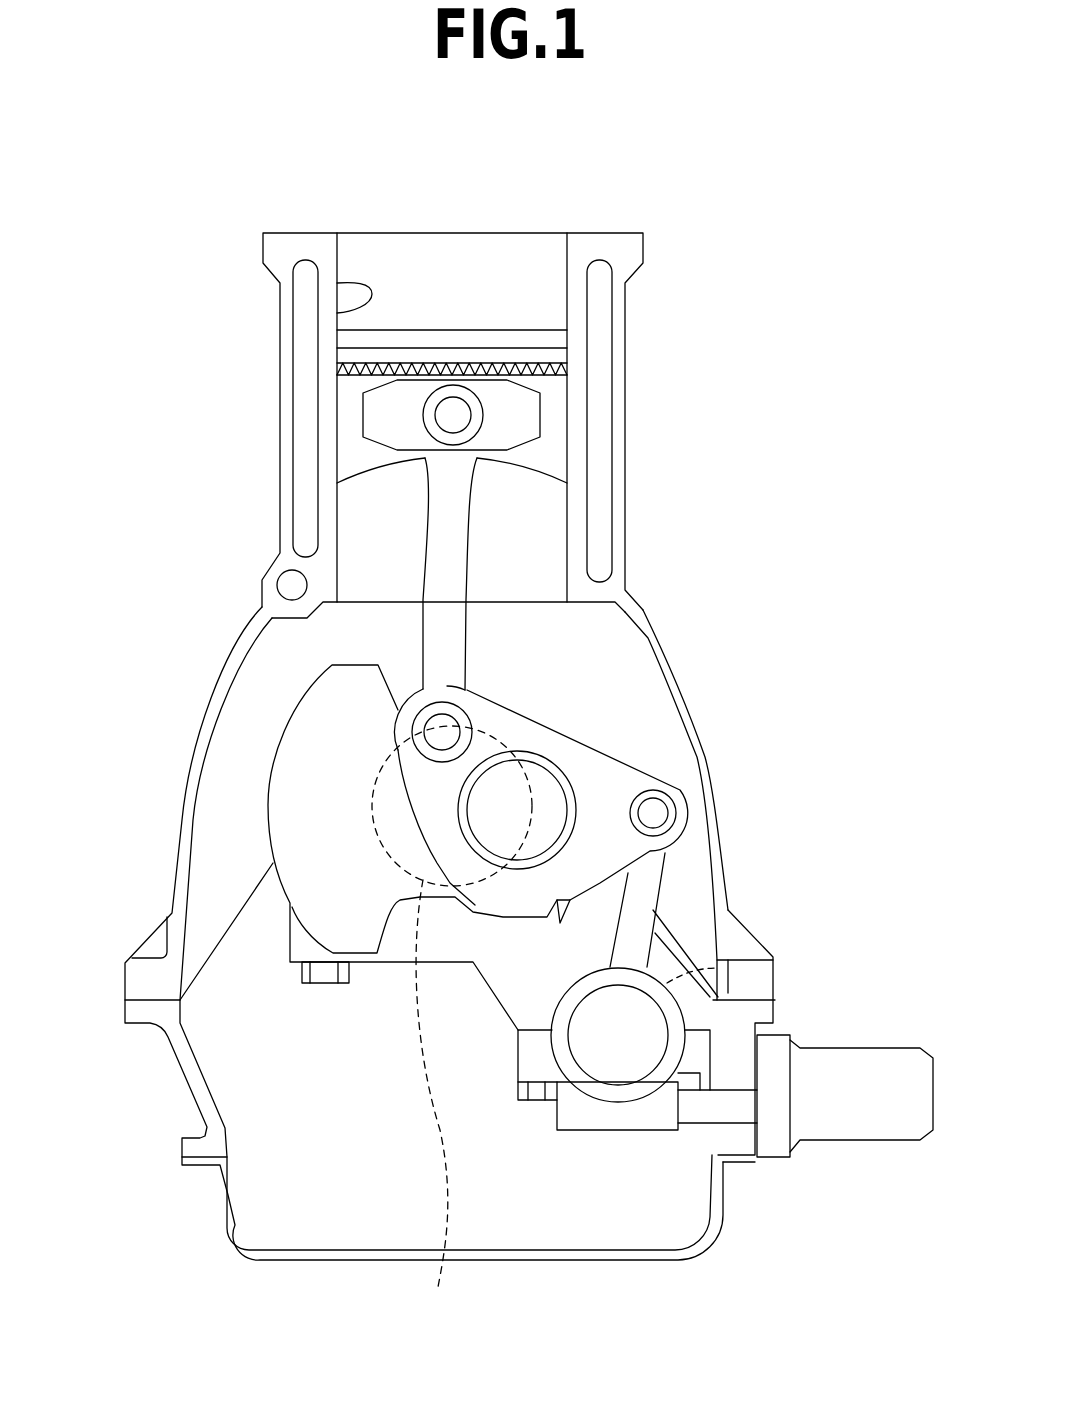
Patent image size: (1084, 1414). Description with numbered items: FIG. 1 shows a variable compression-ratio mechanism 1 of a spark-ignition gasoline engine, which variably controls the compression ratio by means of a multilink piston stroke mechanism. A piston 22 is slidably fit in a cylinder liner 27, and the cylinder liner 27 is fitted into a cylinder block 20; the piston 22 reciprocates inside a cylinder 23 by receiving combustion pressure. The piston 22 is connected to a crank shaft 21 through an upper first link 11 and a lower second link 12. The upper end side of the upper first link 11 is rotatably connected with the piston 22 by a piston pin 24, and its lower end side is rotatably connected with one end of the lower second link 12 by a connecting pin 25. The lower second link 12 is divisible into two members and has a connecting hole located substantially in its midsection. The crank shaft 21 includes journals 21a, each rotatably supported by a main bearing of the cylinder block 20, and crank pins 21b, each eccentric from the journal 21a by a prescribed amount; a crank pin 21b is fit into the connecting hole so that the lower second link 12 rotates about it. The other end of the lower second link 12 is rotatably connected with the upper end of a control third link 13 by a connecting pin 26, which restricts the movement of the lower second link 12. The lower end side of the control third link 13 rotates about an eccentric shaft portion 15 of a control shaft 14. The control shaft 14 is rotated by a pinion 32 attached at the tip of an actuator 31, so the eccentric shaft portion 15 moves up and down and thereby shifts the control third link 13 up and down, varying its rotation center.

The variable compression-ratio mechanism 1 is at (858, 352).
The upper first link 11 is at (443, 563).
The lower second link 12 is at (430, 793).
The control third link 13 is at (640, 892).
The control shaft 14 is at (728, 958).
The eccentric shaft portion 15 is at (625, 1045).
The cylinder block 20 is at (173, 870).
The crank shaft 21 is at (362, 942).
The journal 21a is at (426, 1105).
The crank pin 21b is at (545, 795).
The piston 22 is at (548, 410).
The cylinder 23 is at (625, 308).
The piston pin 24 is at (452, 415).
The connecting pin 25 is at (447, 722).
The connecting pin 26 is at (655, 813).
The cylinder liner 27 is at (337, 313).
The actuator 31 is at (862, 1123).
The pinion 32 is at (578, 1113).